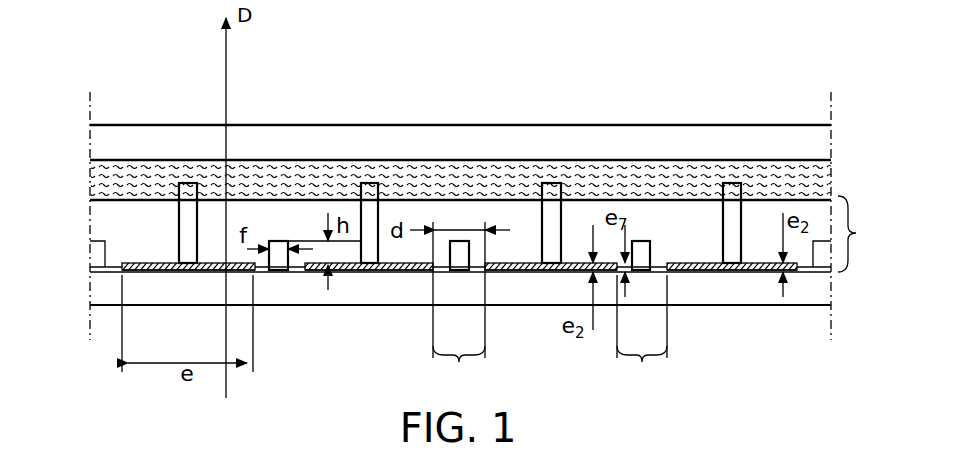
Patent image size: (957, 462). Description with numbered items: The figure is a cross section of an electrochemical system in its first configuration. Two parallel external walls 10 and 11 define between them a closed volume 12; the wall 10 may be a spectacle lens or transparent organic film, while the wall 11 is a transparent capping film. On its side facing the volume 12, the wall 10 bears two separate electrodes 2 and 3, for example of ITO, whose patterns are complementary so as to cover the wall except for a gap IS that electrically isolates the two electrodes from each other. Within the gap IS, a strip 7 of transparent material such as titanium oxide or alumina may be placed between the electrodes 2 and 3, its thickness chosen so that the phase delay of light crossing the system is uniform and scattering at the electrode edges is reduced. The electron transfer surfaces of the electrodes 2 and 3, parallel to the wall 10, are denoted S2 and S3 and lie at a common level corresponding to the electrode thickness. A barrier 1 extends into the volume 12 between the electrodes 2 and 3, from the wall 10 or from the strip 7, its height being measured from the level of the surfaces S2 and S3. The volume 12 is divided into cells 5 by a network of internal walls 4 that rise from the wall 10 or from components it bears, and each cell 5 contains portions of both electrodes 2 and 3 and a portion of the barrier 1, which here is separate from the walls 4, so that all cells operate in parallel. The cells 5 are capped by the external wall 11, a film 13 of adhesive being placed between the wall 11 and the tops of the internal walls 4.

The barrier 1 is at (460, 253).
The electrode 2 is at (145, 262).
The electrode 3 is at (315, 266).
The internal wall 4 is at (188, 197).
The cell 5 is at (272, 231).
The strip 7 is at (290, 266).
The external wall 10 is at (815, 290).
The external wall 11 is at (795, 140).
The closed volume 12 is at (866, 234).
The film of adhesive 13 is at (820, 174).
The electron transfer surface S2 is at (133, 258).
The electron transfer surface S3 is at (346, 252).
The gap IS is at (550, 307).